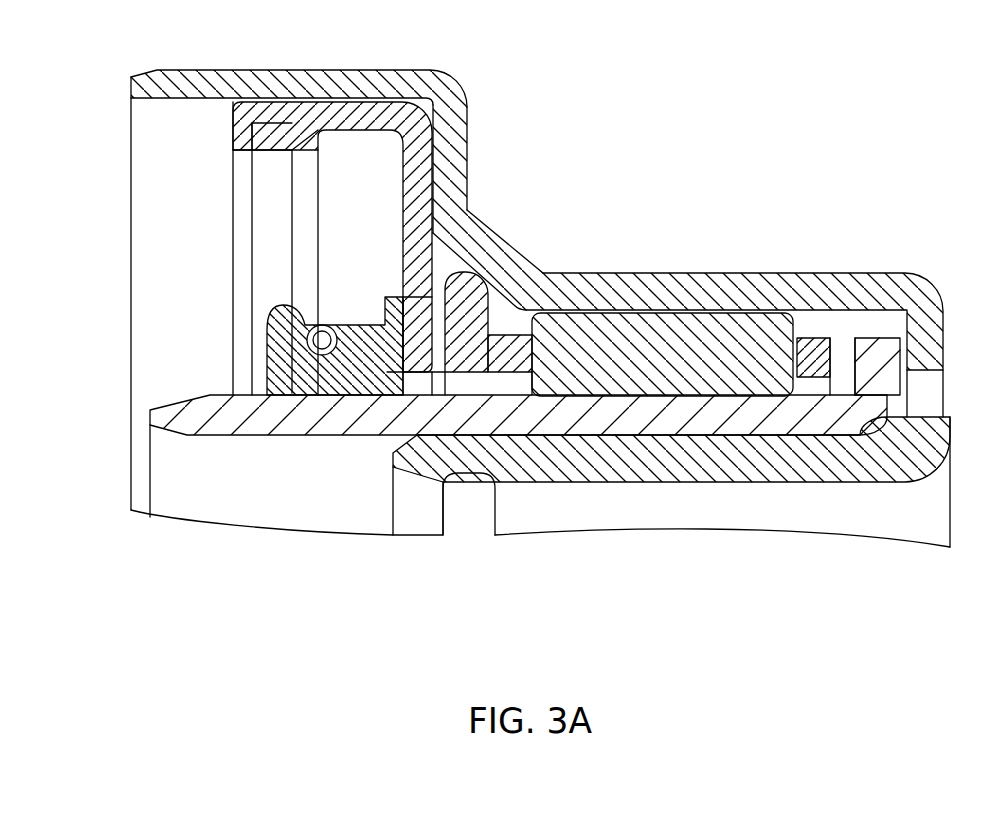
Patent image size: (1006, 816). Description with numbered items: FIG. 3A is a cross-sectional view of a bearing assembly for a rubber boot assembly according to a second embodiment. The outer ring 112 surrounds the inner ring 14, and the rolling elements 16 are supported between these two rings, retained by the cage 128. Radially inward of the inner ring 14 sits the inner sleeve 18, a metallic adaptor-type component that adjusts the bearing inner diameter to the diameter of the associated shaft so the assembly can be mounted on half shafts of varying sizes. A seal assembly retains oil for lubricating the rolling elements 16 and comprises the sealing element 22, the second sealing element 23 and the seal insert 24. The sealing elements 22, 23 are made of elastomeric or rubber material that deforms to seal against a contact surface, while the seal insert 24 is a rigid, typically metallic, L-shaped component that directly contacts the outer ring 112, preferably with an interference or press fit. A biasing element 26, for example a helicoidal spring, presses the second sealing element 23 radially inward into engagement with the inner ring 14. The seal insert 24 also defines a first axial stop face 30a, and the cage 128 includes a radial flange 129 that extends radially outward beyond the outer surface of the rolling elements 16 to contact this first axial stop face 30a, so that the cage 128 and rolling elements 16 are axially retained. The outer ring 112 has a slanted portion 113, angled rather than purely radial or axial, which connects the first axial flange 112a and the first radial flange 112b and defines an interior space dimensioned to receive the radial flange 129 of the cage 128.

The inner ring 14 is at (667, 418).
The rolling elements 16 is at (745, 360).
The inner sleeve 18 is at (773, 458).
The sealing element 22 is at (247, 99).
The second sealing element 23 is at (283, 375).
The seal insert 24 is at (415, 215).
The biasing element 26 is at (322, 340).
The first axial stop face 30a is at (428, 338).
The outer ring 112 is at (412, 80).
The first axial flange 112a is at (748, 287).
The first radial flange 112b is at (447, 158).
The slanted portion 113 is at (488, 249).
The cage 128 is at (490, 360).
The radial flange 129 is at (457, 310).